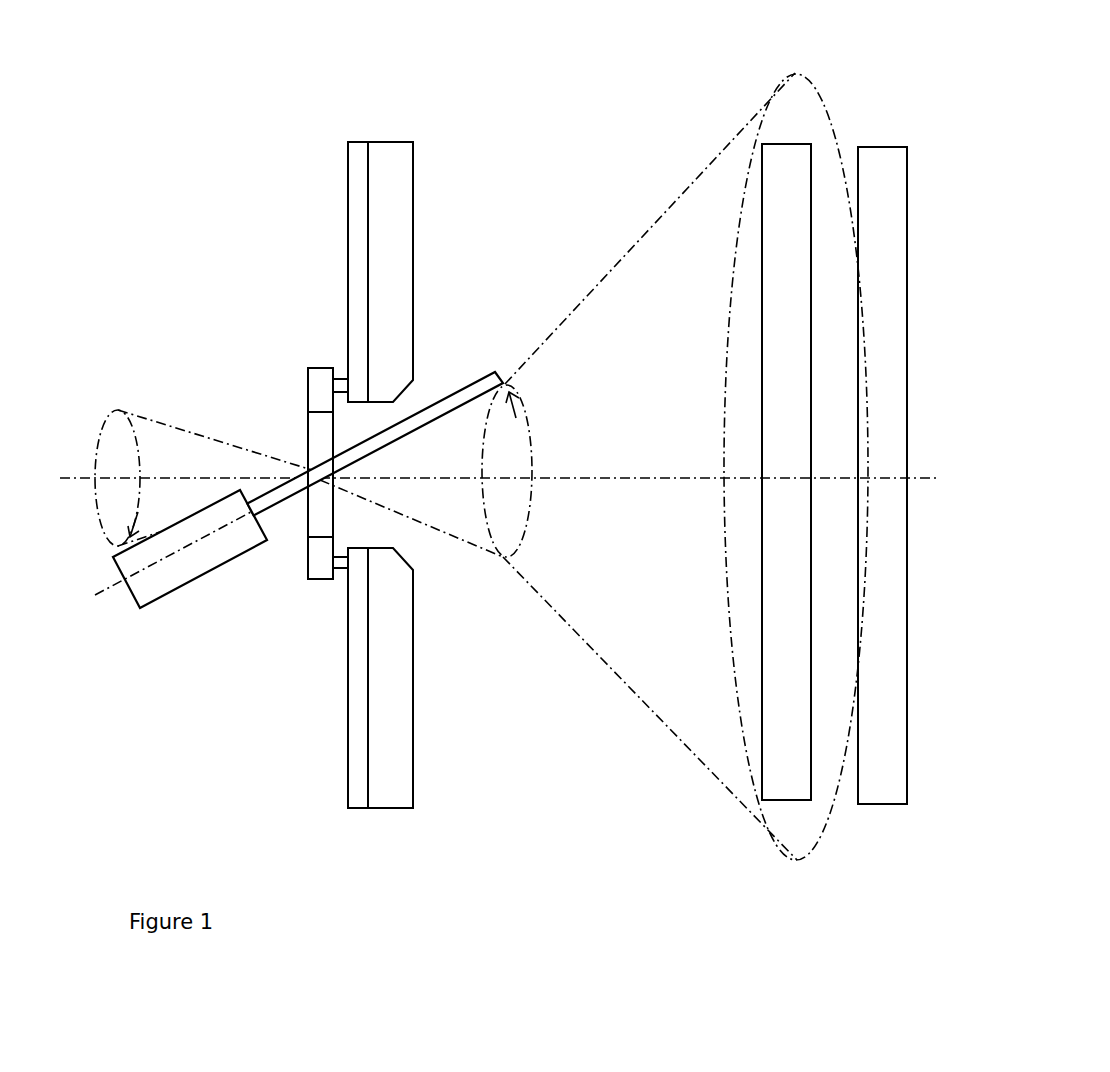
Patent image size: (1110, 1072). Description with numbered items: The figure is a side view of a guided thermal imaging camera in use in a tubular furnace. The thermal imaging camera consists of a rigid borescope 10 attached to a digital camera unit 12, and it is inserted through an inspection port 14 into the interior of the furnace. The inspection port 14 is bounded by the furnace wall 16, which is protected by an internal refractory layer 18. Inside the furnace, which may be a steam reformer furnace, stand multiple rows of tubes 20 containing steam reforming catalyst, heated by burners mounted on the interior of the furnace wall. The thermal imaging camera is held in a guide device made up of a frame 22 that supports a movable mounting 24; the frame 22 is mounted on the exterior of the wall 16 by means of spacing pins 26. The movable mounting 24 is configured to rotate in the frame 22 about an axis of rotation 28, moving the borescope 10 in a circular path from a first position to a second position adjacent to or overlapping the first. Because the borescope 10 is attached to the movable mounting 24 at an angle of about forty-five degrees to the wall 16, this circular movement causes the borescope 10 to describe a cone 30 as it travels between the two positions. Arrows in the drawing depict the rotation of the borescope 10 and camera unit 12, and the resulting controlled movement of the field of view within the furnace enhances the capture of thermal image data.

The rigid borescope 10 is at (480, 377).
The digital camera unit 12 is at (170, 598).
The inspection port 14 is at (418, 551).
The furnace wall 16 is at (348, 232).
The internal refractory layer 18 is at (413, 232).
The tubes 20 is at (907, 380).
The frame 22 is at (317, 392).
The movable mounting 24 is at (318, 440).
The spacing pins 26 is at (338, 568).
The axis of rotation 28 is at (597, 478).
The cone 30 is at (528, 516).